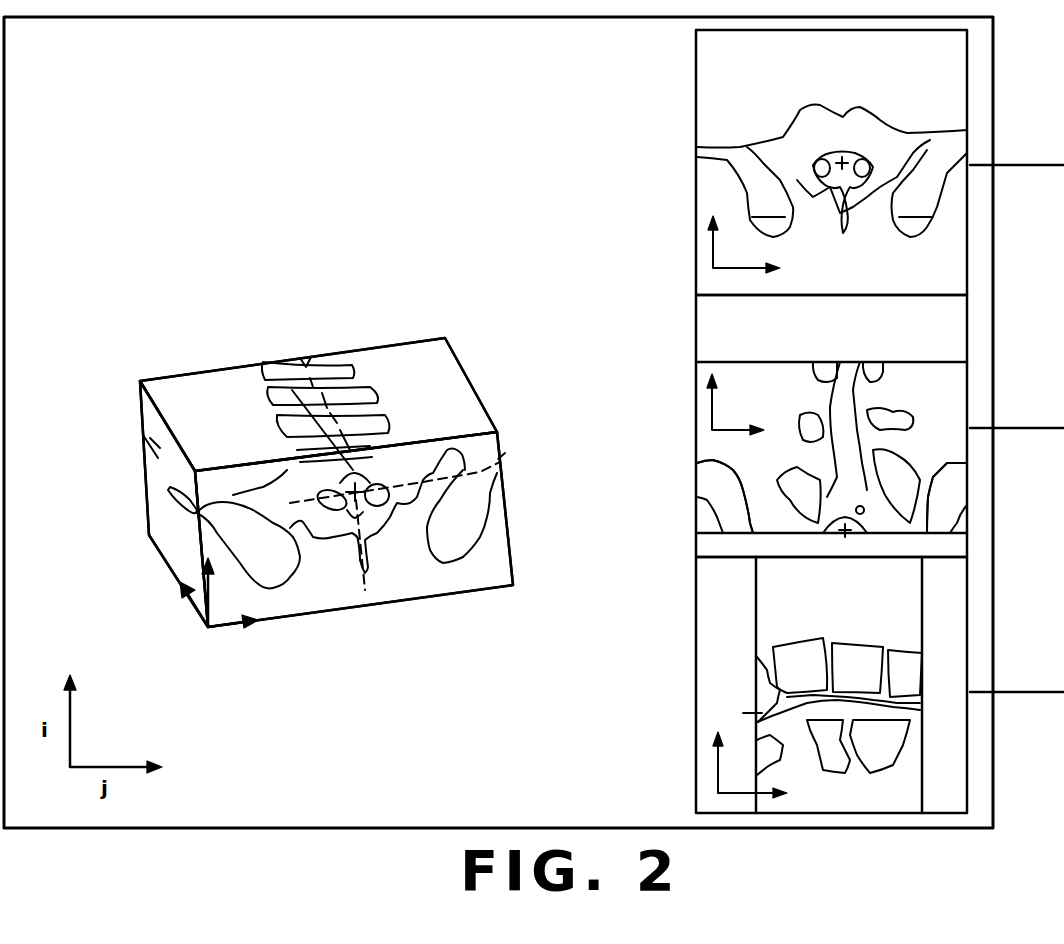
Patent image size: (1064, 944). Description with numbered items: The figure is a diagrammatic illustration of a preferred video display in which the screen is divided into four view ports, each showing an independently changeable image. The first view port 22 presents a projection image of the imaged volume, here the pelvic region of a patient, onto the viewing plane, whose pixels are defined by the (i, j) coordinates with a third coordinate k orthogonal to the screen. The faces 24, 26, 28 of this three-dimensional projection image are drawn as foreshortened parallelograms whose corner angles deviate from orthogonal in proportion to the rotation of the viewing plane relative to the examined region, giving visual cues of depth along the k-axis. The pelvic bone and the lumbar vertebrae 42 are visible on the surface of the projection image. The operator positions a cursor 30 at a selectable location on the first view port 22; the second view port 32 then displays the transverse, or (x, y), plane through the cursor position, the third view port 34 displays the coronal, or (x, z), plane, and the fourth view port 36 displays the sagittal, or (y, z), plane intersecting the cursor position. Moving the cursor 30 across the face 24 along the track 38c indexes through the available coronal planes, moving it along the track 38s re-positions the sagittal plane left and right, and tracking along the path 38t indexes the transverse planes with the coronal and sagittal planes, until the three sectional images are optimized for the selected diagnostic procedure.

The first view port 22 is at (440, 724).
The face 24 is at (330, 592).
The face 26 is at (142, 507).
The face 28 is at (168, 370).
The cursor 30 is at (358, 490).
The second view port 32 is at (968, 108).
The third view port 34 is at (970, 388).
The fourth view port 36 is at (970, 630).
The path 38t is at (315, 352).
The track 38s is at (505, 453).
The track 38c is at (395, 611).
The lumbar vertebrae 42 is at (307, 430).